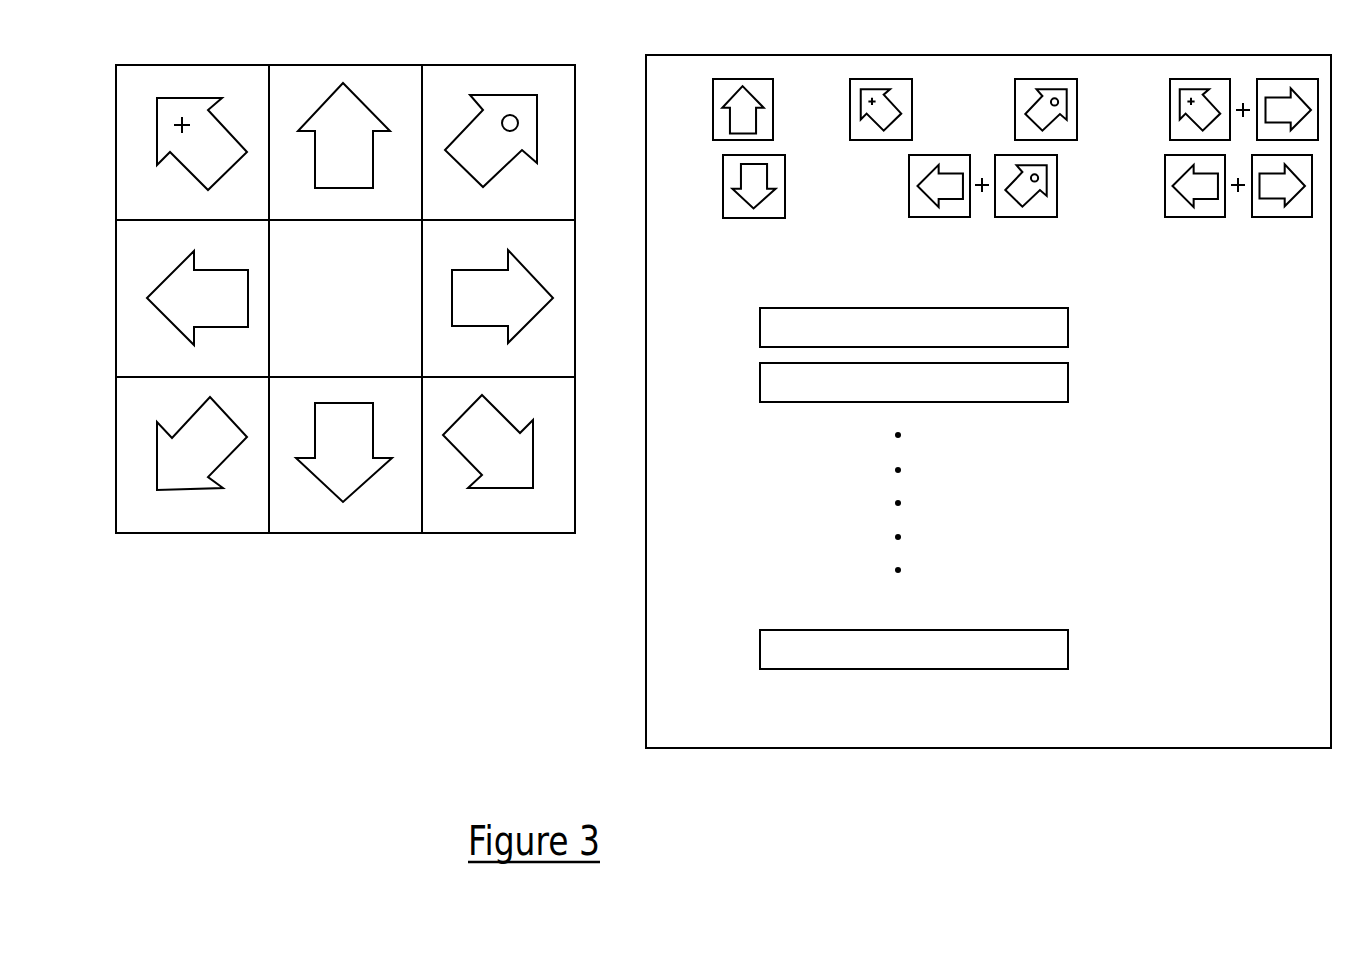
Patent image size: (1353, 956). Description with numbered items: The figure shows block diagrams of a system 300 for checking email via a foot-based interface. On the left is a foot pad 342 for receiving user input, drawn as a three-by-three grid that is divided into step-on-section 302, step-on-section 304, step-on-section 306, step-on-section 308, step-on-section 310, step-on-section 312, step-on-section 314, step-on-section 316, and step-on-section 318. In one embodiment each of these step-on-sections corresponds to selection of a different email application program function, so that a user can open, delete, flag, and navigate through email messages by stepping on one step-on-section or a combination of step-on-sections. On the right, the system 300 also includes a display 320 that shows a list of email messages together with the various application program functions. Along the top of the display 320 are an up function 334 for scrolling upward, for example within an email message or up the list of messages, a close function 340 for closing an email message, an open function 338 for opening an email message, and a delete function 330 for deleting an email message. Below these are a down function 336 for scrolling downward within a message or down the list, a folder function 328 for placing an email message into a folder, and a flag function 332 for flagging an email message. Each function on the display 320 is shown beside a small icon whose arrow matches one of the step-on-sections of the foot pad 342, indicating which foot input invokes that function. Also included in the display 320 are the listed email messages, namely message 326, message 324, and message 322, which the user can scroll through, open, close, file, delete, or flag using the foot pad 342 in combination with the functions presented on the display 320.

The system 300 is at (594, 37).
The step-on-section 302 is at (210, 213).
The step-on-section 304 is at (360, 213).
The step-on-section 306 is at (513, 213).
The step-on-section 308 is at (210, 370).
The step-on-section 310 is at (360, 370).
The step-on-section 312 is at (513, 370).
The step-on-section 314 is at (208, 528).
The step-on-section 316 is at (360, 528).
The step-on-section 318 is at (513, 528).
The display 320 is at (703, 748).
The message 322 is at (918, 664).
The message 324 is at (918, 397).
The message 326 is at (918, 342).
The folder function 328 is at (909, 210).
The delete function 330 is at (1180, 79).
The flag function 332 is at (1165, 209).
The up function 334 is at (738, 79).
The down function 336 is at (723, 211).
The open function 338 is at (1032, 79).
The close function 340 is at (865, 79).
The foot pad 342 is at (333, 65).